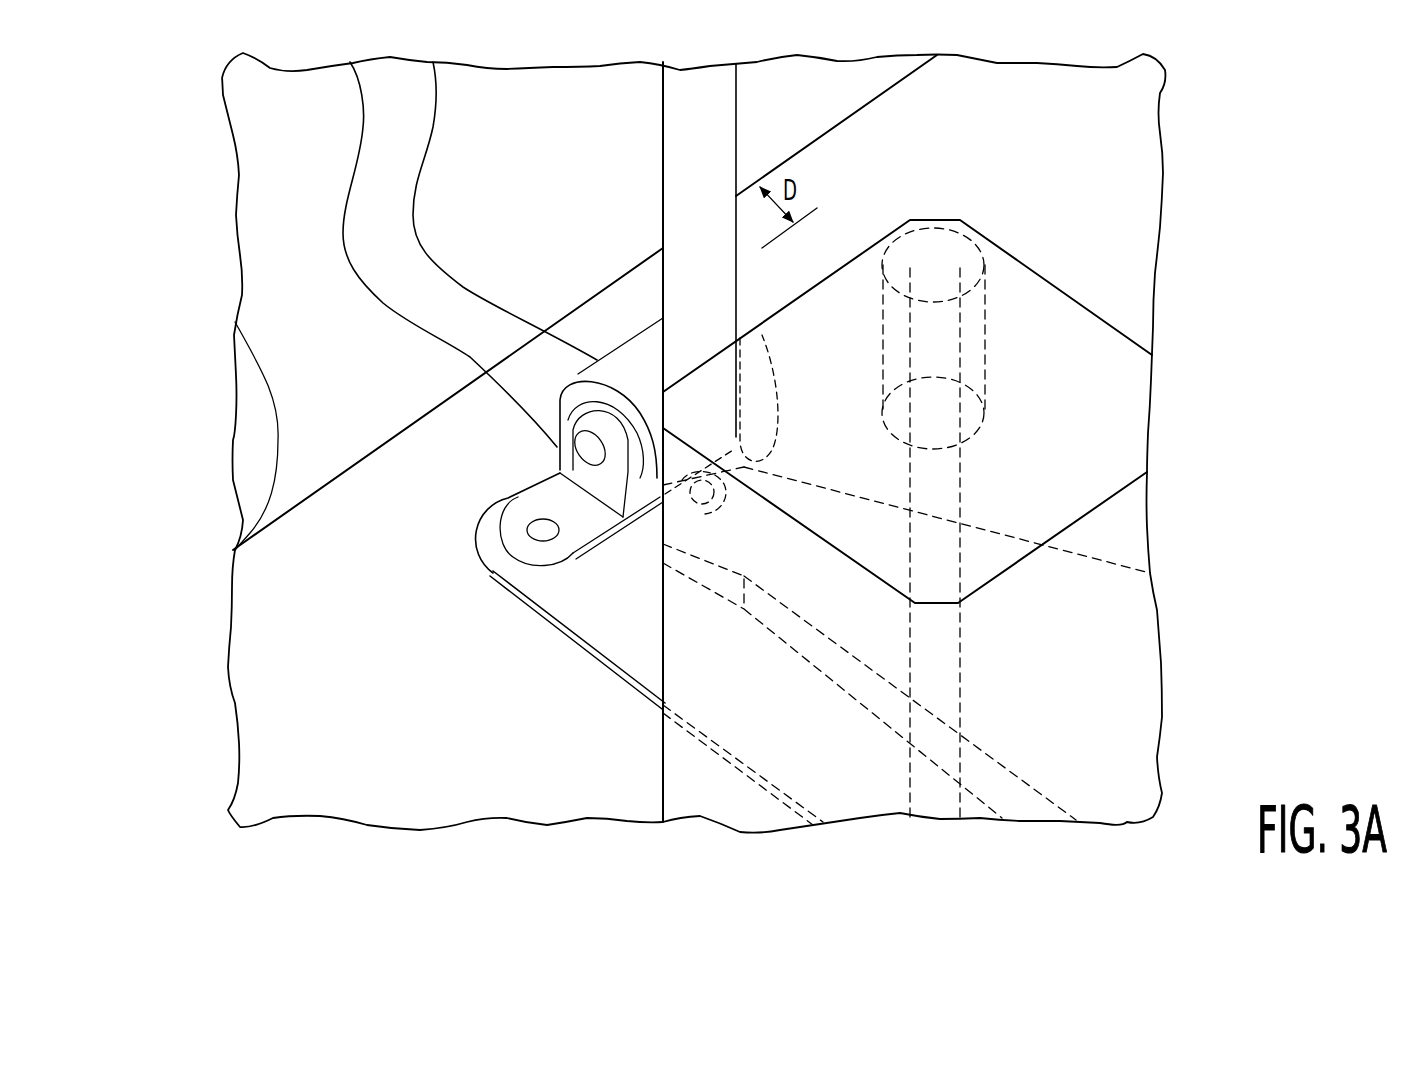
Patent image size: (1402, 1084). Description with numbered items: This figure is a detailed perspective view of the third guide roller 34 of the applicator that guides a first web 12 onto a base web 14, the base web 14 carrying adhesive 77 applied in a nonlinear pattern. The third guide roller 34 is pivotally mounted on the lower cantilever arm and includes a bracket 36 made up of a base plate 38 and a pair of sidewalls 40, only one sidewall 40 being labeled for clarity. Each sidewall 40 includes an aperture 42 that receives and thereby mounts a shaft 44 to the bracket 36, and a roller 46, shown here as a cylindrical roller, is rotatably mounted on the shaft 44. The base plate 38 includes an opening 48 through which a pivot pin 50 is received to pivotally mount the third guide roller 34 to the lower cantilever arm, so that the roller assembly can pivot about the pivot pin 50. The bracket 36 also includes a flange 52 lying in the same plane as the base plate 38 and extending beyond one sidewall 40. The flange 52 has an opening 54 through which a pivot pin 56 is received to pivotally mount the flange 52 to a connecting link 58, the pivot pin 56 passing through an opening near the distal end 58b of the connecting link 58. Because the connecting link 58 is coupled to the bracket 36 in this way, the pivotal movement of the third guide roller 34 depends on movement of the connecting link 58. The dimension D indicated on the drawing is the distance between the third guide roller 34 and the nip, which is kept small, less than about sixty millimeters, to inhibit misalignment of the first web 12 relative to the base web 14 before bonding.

The first web 12 is at (700, 100).
The base web 14 is at (558, 93).
The third guide roller 34 is at (506, 622).
The bracket 36 is at (613, 548).
The base plate 38 is at (630, 612).
The sidewall 40 is at (514, 524).
The aperture 42 is at (534, 449).
The shaft 44 is at (578, 462).
The roller 46 is at (637, 365).
The opening 48 is at (727, 489).
The pivot pin 50 is at (707, 520).
The flange 52 is at (560, 593).
The opening 54 is at (535, 545).
The pivot pin 56 is at (520, 513).
The connecting link 58 is at (690, 570).
The distal end 58b is at (508, 510).
The adhesive 77 is at (367, 230).